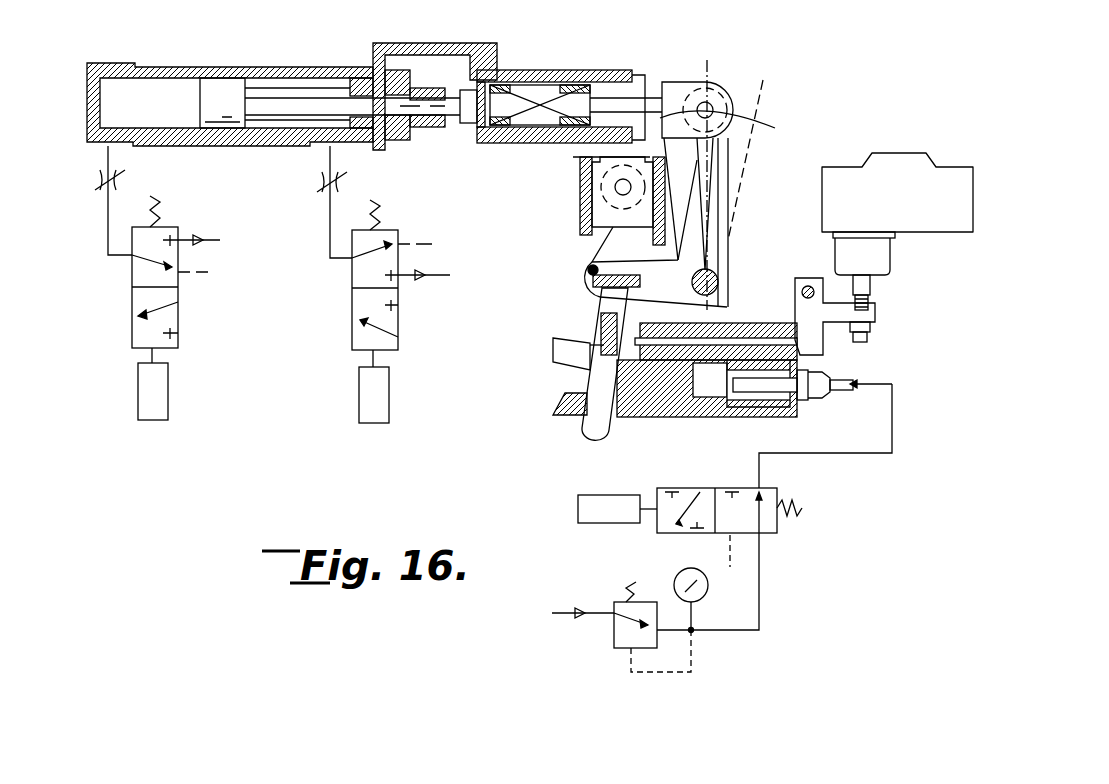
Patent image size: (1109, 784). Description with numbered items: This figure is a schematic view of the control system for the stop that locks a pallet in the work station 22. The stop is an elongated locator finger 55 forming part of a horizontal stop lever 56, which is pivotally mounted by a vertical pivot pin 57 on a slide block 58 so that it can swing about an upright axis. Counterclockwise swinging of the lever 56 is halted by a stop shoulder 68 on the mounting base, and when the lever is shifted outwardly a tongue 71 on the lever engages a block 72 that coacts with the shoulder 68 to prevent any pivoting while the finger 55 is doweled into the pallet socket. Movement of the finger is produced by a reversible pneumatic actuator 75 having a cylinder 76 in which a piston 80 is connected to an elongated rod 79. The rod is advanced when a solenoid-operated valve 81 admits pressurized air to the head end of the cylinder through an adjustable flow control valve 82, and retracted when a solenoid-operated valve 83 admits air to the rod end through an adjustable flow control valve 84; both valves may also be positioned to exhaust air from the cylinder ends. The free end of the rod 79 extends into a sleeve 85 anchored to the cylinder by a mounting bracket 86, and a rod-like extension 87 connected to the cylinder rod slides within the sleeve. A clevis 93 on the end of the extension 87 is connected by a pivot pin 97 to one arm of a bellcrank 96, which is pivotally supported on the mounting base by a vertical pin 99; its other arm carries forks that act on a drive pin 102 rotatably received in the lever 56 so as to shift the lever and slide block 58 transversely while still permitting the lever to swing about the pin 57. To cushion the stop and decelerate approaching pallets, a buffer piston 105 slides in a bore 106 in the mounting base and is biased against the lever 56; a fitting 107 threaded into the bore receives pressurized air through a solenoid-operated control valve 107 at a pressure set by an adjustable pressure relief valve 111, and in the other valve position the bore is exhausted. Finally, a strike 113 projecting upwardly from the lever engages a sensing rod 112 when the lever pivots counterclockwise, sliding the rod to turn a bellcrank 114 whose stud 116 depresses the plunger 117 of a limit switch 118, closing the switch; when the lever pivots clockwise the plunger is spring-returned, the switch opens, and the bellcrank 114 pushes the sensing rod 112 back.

The work station 22 is at (585, 452).
The stop finger 55 is at (587, 432).
The stop lever 56 is at (585, 372).
The pivot pin 57 is at (614, 187).
The slide block 58 is at (592, 216).
The stop shoulder 68 is at (655, 410).
The tongue 71 is at (553, 348).
The block 72 is at (568, 406).
The pneumatic actuator 75 is at (152, 58).
The cylinder 76 is at (233, 78).
The cylinder rod 79 is at (440, 118).
The piston 80 is at (244, 86).
The solenoid-operated valve 81 is at (180, 322).
The adjustable flow control valve 82 is at (118, 178).
The solenoid-operated valve 83 is at (352, 296).
The adjustable flow control valve 84 is at (322, 182).
The sleeve 85 is at (555, 55).
The mounting bracket 86 is at (437, 43).
The extension rod 87 is at (560, 128).
The clevis 93 is at (685, 82).
The bellcrank 96 is at (738, 160).
The pivot pin 97 is at (718, 100).
The vertical pin 99 is at (716, 275).
The drive pin 102 is at (590, 266).
The buffer piston 105 is at (704, 408).
The bore 106 is at (745, 407).
The fitting and solenoid-operated control valve 107 is at (778, 396).
The adjustable pressure relief valve 111 is at (618, 642).
The sensing rod 112 is at (702, 338).
The strike 113 is at (605, 318).
The bellcrank 114 is at (815, 338).
The stud 116 is at (870, 306).
The plunger 117 is at (872, 287).
The limit switch 118 is at (900, 167).